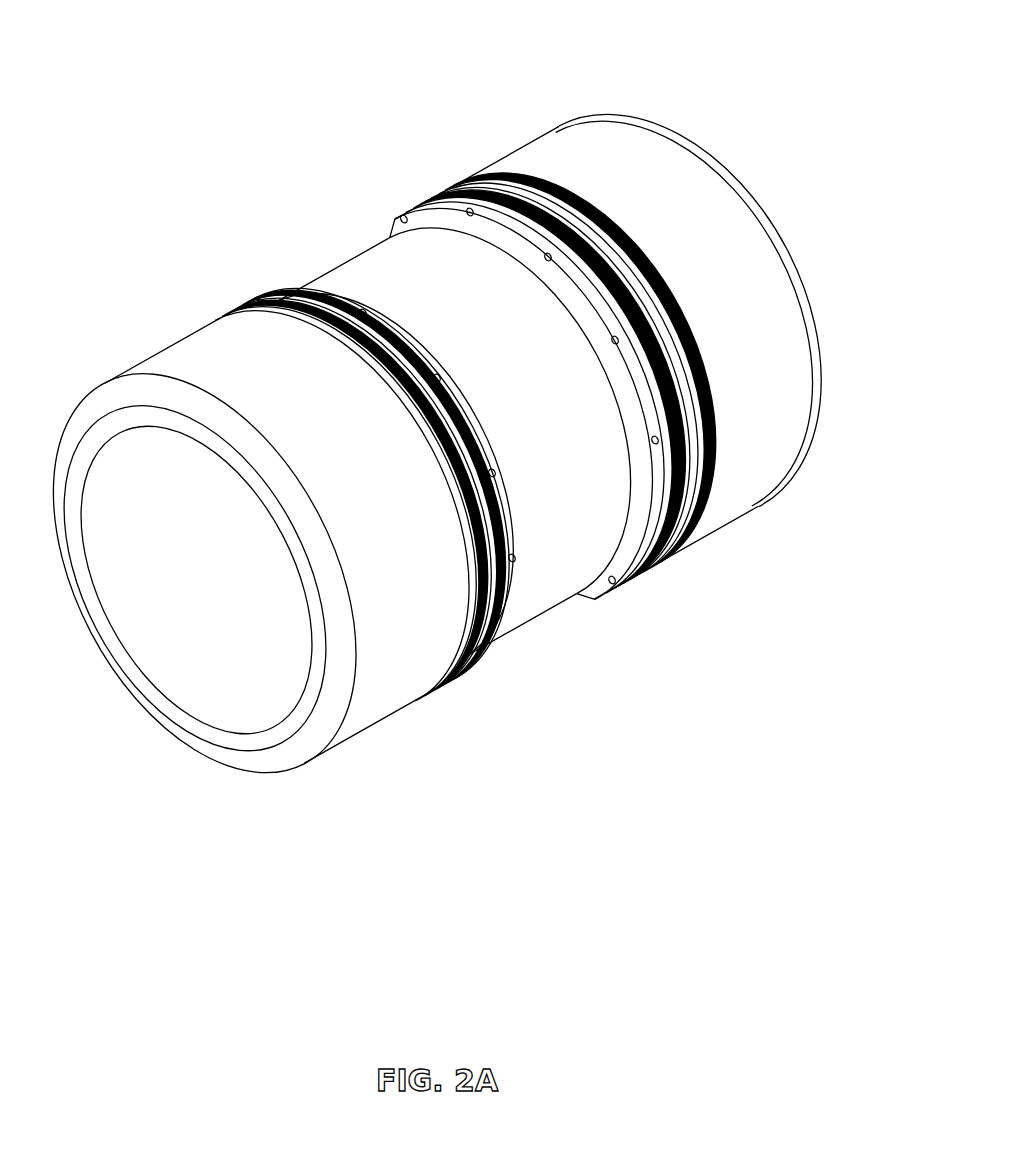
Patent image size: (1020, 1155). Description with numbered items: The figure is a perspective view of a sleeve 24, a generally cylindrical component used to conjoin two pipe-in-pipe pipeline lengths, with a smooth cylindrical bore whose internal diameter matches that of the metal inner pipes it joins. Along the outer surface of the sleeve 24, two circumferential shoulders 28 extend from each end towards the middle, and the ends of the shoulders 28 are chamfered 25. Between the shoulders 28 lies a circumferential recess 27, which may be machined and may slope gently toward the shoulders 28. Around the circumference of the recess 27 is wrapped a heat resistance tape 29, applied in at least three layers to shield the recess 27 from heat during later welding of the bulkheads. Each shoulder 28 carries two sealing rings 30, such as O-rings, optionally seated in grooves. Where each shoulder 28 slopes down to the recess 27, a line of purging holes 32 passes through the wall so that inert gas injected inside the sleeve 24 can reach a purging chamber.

The sleeve 24 is at (449, 426).
The chamfer 25 is at (97, 396).
The circumferential recess 27 is at (507, 345).
The circumferential shoulder 28 is at (735, 265).
The heat resistance tape 29 is at (503, 553).
The sealing ring 30 is at (593, 218).
The purging hole 32 is at (658, 440).